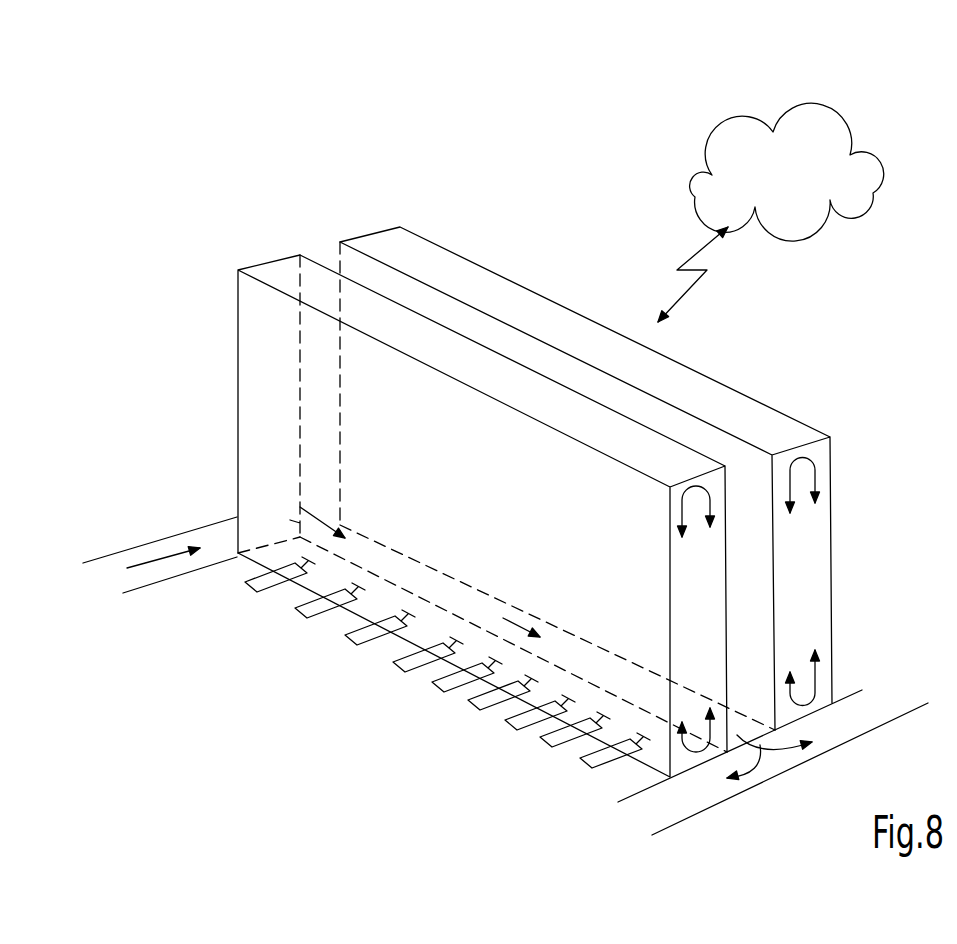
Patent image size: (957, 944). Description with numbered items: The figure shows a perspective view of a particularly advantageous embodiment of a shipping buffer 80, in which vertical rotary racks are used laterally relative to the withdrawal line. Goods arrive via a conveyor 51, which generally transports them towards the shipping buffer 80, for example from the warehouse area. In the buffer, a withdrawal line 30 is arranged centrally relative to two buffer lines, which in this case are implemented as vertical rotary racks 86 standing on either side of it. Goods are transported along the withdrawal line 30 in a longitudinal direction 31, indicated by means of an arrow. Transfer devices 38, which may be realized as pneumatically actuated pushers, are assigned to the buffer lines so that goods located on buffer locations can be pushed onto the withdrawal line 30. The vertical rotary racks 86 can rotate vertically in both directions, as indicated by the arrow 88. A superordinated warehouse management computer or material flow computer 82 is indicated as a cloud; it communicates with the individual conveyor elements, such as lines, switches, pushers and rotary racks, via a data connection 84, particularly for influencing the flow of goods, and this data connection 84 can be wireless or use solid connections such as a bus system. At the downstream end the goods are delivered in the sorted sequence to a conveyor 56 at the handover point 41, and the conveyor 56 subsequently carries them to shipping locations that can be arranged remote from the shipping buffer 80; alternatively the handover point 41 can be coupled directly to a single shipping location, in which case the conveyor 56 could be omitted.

The shipping buffer 80 is at (258, 180).
The vertical rotary racks 86 is at (237, 362).
The warehouse management computer or material flow computer 82 is at (822, 188).
The data connection 84 is at (702, 273).
The arrow 88 is at (817, 465).
The conveyor 51 is at (112, 552).
The conveyor 56 is at (730, 797).
The withdrawal line 30 is at (383, 568).
The longitudinal direction 31 is at (503, 618).
The transfer devices 38 is at (298, 610).
The handover point 41 is at (742, 718).